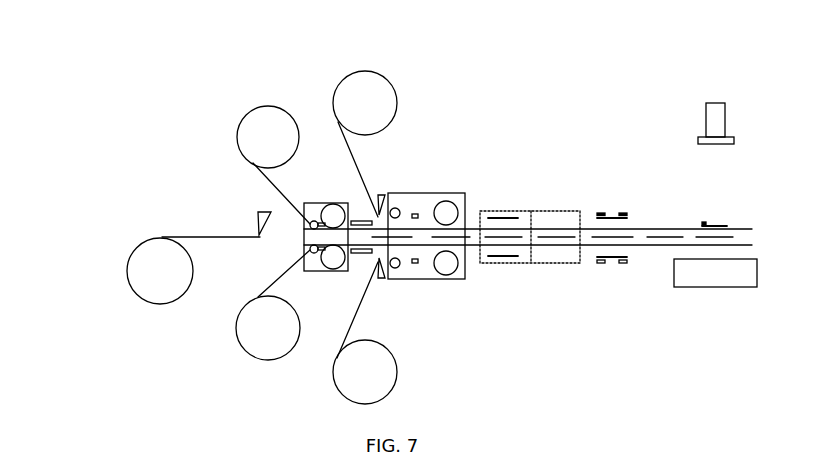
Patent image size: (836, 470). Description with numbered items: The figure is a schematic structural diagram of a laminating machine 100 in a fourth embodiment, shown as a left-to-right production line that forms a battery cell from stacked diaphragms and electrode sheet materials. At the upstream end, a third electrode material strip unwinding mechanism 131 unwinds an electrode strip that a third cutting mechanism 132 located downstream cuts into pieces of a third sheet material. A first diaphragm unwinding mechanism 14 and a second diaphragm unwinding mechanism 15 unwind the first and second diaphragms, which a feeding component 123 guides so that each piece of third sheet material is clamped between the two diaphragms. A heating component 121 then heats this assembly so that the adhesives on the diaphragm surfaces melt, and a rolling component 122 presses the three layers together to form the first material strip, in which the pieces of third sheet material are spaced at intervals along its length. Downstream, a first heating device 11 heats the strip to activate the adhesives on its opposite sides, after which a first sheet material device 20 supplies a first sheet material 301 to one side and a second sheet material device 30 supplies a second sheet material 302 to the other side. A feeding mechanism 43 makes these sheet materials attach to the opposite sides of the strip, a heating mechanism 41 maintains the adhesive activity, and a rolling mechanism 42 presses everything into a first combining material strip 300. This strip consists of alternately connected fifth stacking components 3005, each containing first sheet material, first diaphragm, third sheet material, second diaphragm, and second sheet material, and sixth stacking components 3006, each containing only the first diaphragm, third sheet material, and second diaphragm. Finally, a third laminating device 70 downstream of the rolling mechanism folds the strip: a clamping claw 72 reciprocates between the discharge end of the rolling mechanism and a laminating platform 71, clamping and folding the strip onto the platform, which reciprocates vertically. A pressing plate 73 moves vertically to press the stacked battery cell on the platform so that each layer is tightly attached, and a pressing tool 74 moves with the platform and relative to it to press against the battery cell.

The laminating machine 100 is at (56, 49).
The second diaphragm unwinding mechanism 15 is at (238, 118).
The first diaphragm unwinding mechanism 14 is at (237, 342).
The second sheet material device 30 is at (407, 70).
The first sheet material device 20 is at (417, 337).
The third electrode material strip unwinding mechanism 131 is at (127, 271).
The third cutting mechanism 132 is at (258, 218).
The feeding component 123 is at (312, 222).
The heating component 121 is at (314, 252).
The rolling component 122 is at (336, 270).
The first heating device 11 is at (358, 221).
The heating mechanism 41 is at (414, 213).
The rolling mechanism 42 is at (441, 200).
The feeding mechanism 43 is at (397, 279).
The first combining material strip 300 is at (516, 189).
The fifth stacking component 3005 is at (480, 263).
The sixth stacking component 3006 is at (558, 211).
The second sheet material 302 is at (507, 216).
The first sheet material 301 is at (512, 258).
The third laminating device 70 is at (681, 187).
The clamping claw 72 is at (626, 264).
The pressing plate 73 is at (716, 113).
The pressing tool 74 is at (726, 224).
The laminating platform 71 is at (720, 282).